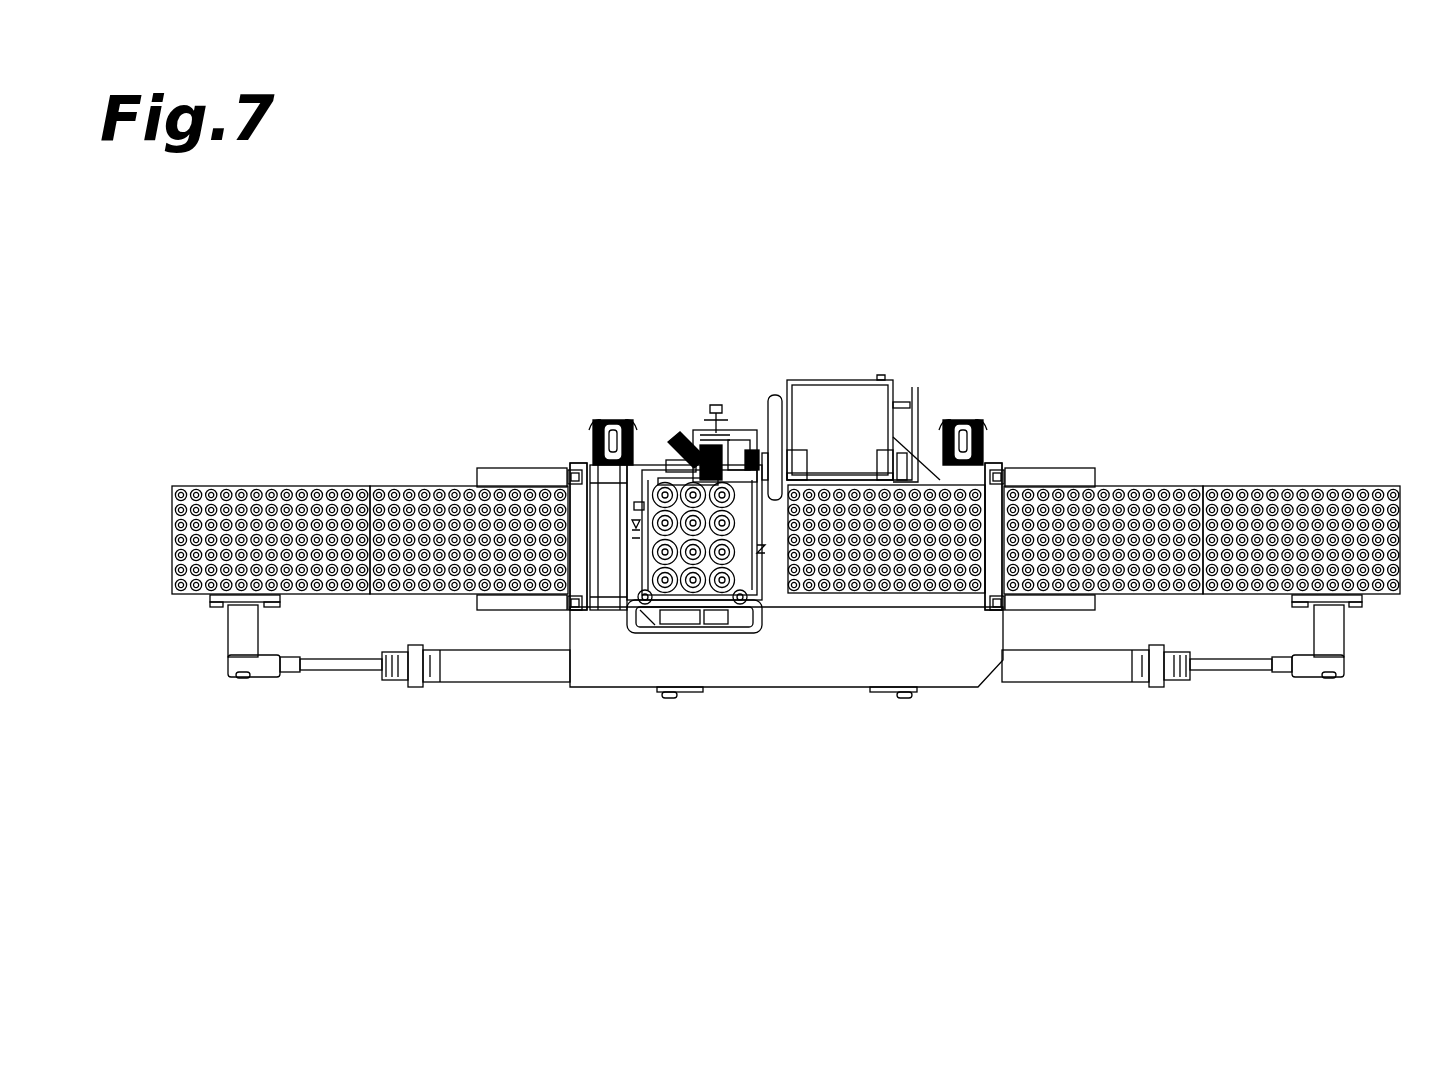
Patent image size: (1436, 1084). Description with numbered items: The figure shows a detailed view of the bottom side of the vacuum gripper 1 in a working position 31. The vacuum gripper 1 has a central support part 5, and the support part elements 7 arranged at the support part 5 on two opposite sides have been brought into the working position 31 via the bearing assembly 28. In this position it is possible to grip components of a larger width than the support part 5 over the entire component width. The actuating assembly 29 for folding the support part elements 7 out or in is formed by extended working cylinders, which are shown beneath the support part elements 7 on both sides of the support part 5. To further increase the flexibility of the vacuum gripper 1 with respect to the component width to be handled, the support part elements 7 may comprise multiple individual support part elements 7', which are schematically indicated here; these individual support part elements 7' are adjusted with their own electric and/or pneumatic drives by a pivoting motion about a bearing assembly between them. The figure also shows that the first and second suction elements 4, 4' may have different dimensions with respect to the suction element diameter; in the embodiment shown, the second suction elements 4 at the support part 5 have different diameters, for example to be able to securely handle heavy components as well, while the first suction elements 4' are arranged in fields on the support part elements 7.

The vacuum gripper 1 is at (1186, 205).
The second suction elements 4 is at (788, 415).
The first suction elements 4' is at (370, 475).
The support part 5 is at (811, 668).
The support part elements 7 is at (786, 410).
The individual support part elements 7' is at (1202, 476).
The bearing assembly 28 is at (1000, 452).
The actuating assembly 29 is at (1070, 665).
The working position 31 is at (1263, 800).